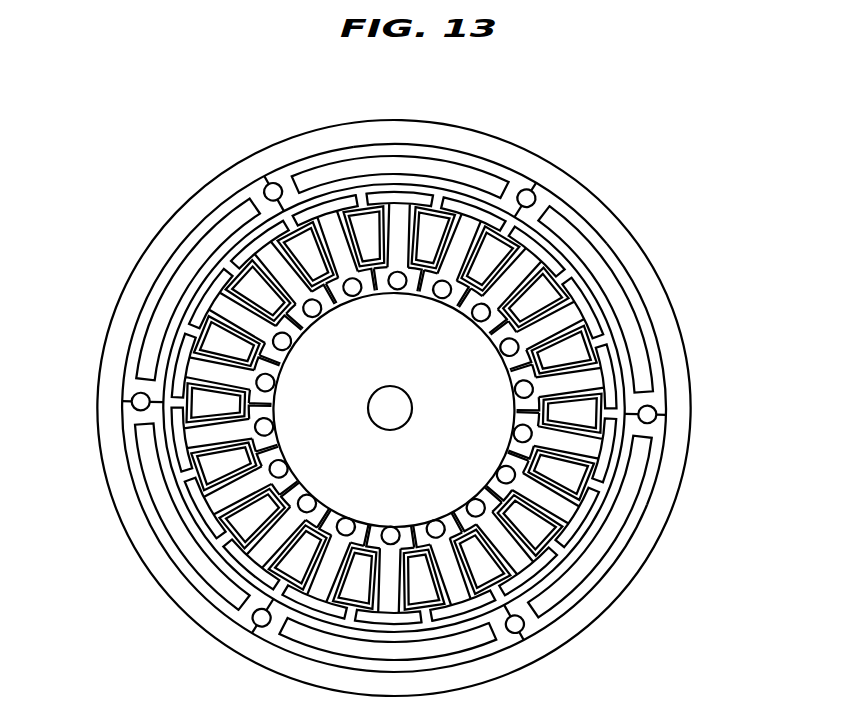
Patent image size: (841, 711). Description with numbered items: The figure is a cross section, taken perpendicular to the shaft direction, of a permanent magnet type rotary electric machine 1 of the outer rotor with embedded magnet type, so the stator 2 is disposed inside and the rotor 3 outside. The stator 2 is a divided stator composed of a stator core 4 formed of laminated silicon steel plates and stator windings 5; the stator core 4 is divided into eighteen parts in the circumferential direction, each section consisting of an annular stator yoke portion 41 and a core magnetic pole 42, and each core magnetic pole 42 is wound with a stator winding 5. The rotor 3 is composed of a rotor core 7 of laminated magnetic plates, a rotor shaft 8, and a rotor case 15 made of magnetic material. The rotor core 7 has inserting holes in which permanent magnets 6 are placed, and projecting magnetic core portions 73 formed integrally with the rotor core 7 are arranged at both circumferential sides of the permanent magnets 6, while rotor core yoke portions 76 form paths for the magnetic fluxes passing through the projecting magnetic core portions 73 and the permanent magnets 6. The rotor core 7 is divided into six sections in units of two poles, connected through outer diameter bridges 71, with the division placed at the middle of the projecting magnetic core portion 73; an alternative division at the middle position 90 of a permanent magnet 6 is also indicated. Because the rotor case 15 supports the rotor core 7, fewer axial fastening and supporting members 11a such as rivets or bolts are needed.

The rotary electric machine 1 is at (489, 133).
The stator 2 is at (200, 300).
The rotor 3 is at (608, 207).
The stator core 4 is at (562, 250).
The stator winding 5 is at (366, 224).
The permanent magnet 6 is at (614, 292).
The rotor core 7 is at (543, 190).
The rotor shaft 8 is at (392, 412).
The axial direction fastening and supporting member 11a is at (527, 188).
The rotor case 15 is at (684, 402).
The stator yoke portion 41 is at (592, 497).
The core magnetic pole 42 is at (582, 443).
The outer diameter bridge 71 is at (401, 190).
The projecting magnetic core portion 73 is at (256, 200).
The rotor core yoke portion 76 is at (651, 340).
The middle position 90 is at (158, 547).